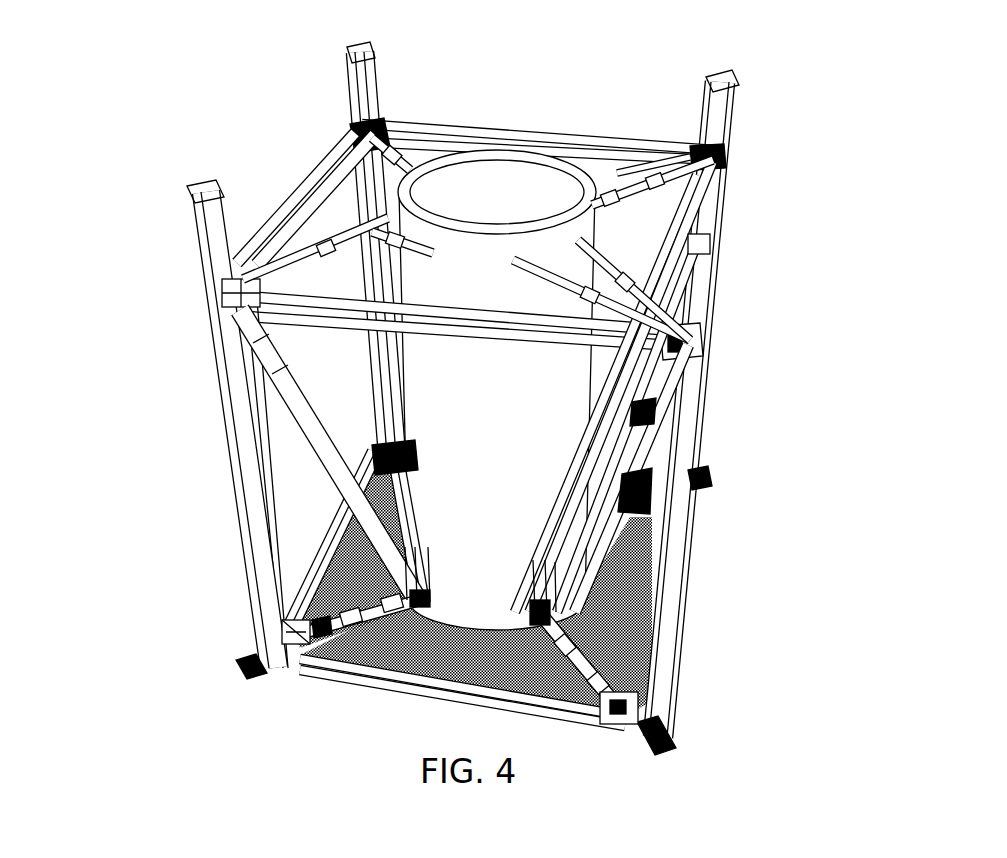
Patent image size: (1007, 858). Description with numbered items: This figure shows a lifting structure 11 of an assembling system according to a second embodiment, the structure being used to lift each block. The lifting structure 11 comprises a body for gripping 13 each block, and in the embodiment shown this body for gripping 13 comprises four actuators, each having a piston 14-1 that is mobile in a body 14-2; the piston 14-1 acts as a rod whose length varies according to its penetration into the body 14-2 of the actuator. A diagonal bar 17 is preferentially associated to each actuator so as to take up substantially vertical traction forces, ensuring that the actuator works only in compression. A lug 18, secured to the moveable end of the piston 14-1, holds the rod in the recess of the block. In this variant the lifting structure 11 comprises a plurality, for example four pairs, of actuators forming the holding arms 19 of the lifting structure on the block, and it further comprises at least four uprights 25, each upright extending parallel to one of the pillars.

The structure for lifting 11 is at (172, 459).
The body for gripping 13 is at (568, 660).
The piston 14-1 is at (378, 601).
The body 14-2 is at (331, 645).
The diagonal bar 17 is at (305, 407).
The lug 18 is at (530, 597).
The holding arms 19 is at (377, 131).
The uprights 25 is at (682, 571).